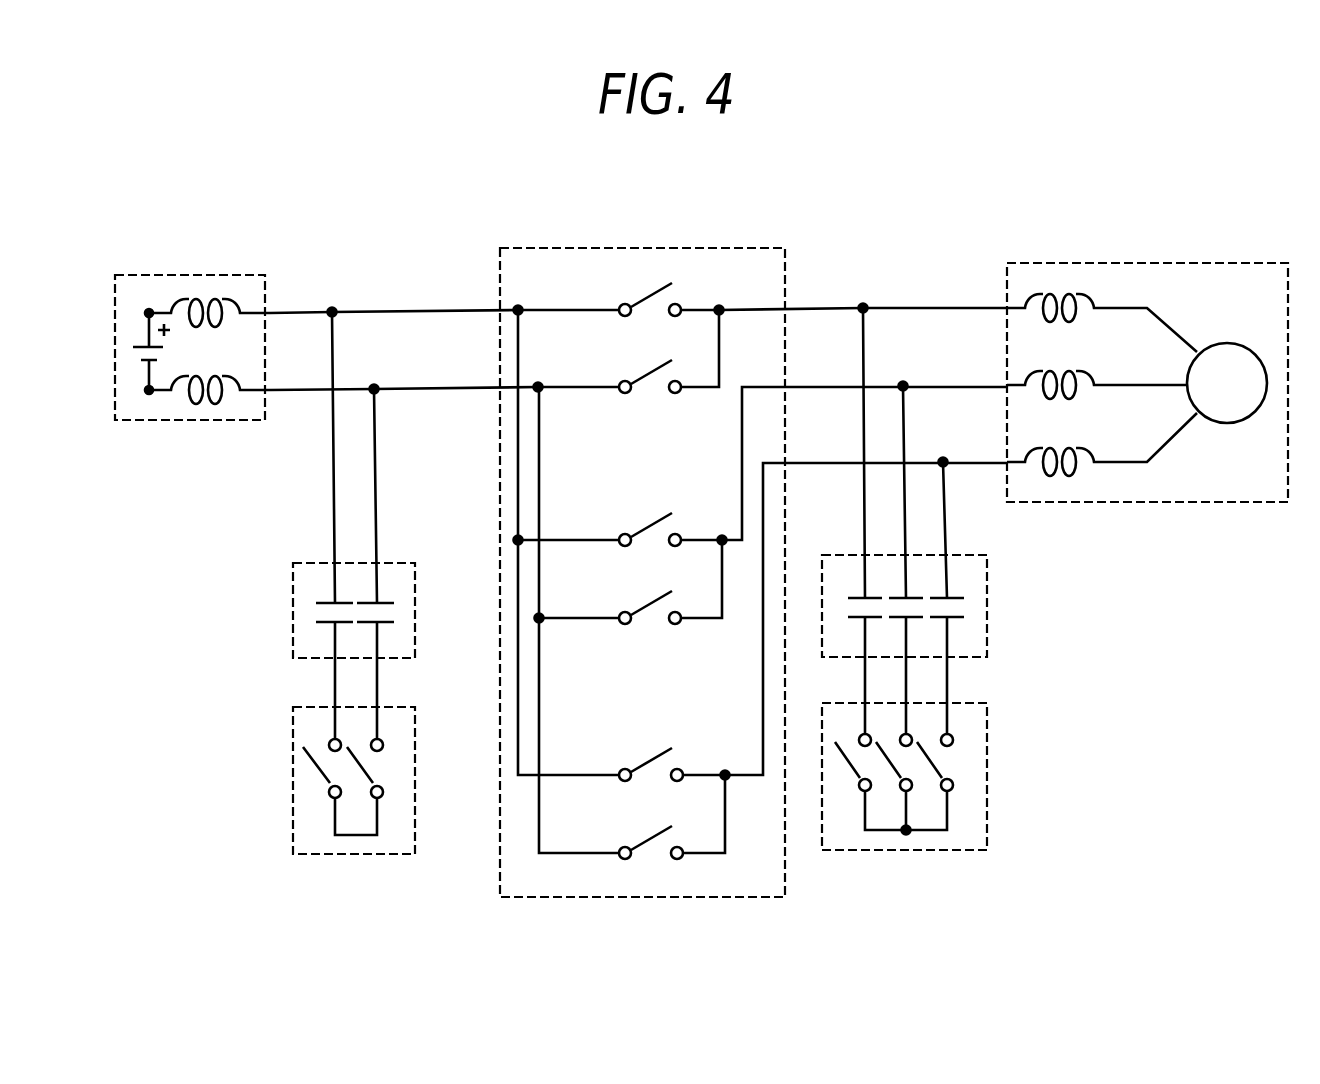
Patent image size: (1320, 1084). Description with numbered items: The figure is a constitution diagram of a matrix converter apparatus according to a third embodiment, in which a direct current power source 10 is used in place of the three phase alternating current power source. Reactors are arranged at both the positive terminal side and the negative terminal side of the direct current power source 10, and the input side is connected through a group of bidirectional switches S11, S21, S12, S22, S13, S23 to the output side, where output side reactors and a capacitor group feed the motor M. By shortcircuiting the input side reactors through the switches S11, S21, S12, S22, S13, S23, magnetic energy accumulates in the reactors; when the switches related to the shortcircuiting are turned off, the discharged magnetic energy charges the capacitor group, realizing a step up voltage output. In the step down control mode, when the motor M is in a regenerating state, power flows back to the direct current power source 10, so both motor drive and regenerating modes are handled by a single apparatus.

The direct current power source 10 is at (177, 349).
The switch S11 is at (618, 296).
The switch S21 is at (618, 373).
The switch S12 is at (618, 526).
The switch S22 is at (618, 604).
The switch S13 is at (619, 761).
The switch S23 is at (619, 839).
The motor M is at (1227, 383).